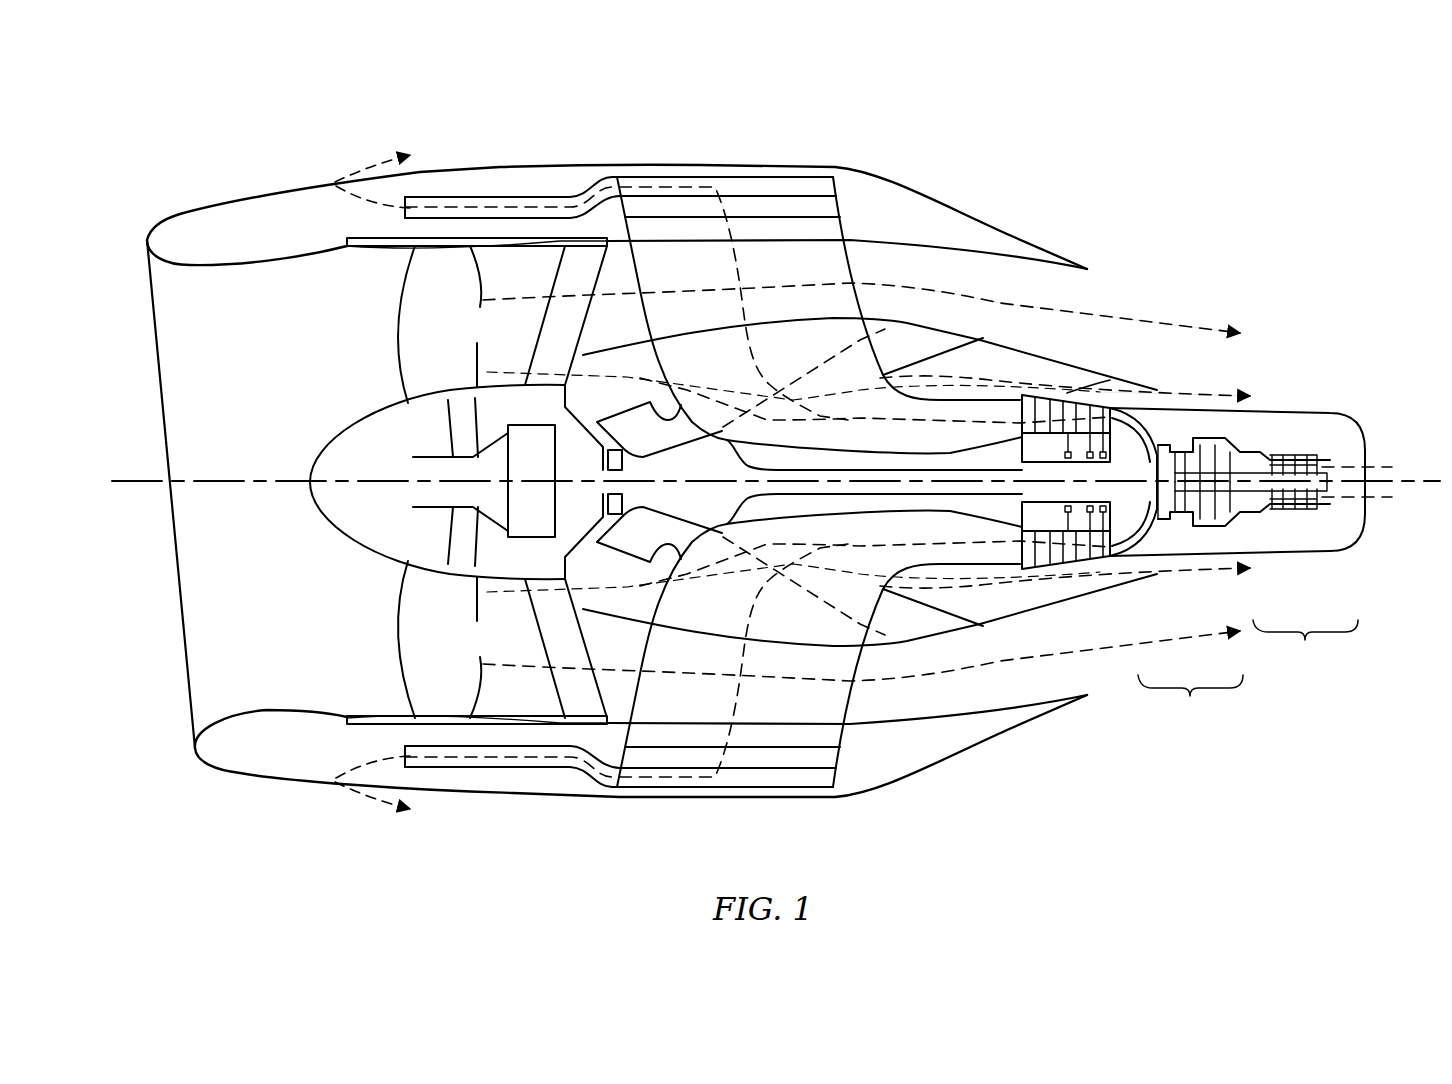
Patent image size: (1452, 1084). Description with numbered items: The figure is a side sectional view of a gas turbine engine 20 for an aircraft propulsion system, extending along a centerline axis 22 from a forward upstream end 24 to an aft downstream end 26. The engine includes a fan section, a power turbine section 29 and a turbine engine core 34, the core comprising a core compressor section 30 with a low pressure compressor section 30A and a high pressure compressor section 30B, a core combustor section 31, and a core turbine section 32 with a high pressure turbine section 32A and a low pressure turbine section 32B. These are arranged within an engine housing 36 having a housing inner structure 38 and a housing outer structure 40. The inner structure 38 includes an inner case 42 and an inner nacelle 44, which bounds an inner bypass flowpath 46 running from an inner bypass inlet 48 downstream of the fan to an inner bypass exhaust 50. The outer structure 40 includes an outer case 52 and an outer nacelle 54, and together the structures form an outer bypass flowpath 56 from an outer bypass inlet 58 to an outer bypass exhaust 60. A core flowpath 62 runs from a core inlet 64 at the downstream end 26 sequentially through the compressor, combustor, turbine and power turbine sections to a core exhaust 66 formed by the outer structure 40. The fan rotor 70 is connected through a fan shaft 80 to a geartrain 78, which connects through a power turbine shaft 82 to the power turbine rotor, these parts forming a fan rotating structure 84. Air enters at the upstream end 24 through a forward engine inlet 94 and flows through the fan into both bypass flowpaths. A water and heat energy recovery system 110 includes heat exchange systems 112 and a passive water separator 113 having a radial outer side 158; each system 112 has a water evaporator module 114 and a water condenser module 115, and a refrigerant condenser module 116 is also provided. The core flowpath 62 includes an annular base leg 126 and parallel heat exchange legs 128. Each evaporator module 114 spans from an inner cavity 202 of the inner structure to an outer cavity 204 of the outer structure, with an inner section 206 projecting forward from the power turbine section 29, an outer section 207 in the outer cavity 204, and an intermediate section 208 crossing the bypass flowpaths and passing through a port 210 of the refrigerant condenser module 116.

The gas turbine engine 20 is at (190, 165).
The centerline axis 22 is at (118, 481).
The upstream end 24 is at (147, 240).
The downstream end 26 is at (1362, 445).
The power turbine section 29 is at (1060, 570).
The core compressor section 30 is at (1305, 649).
The low pressure compressor section 30A is at (1302, 520).
The high pressure compressor section 30B is at (1250, 520).
The core combustor section 31 is at (1218, 528).
The core turbine section 32 is at (1190, 701).
The high pressure turbine section 32A is at (1184, 523).
The low pressure turbine section 32B is at (1168, 523).
The turbine engine core 34 is at (1278, 437).
The engine housing 36 is at (1022, 220).
The housing inner structure 38 is at (1068, 357).
The housing outer structure 40 is at (970, 210).
The inner case 42 is at (1067, 390).
The inner nacelle 44 is at (1027, 350).
The inner bypass flowpath 46 is at (941, 474).
The inner bypass inlet 48 is at (580, 360).
The inner bypass exhaust 50 is at (1157, 393).
The outer case 52 is at (360, 240).
The outer nacelle 54 is at (263, 192).
The outer bypass flowpath 56 is at (968, 471).
The outer bypass inlet 58 is at (593, 292).
The outer bypass exhaust 60 is at (1083, 292).
The core flowpath 62 is at (1160, 437).
The core inlet 64 is at (1375, 460).
The core exhaust 66 is at (340, 194).
The fan rotor 70 is at (440, 535).
The geartrain 78 is at (531, 481).
The fan shaft 80 is at (462, 545).
The power turbine shaft 82 is at (552, 537).
The fan rotating structure 84 is at (400, 455).
The forward engine inlet 94 is at (158, 352).
The water and heat energy recovery system 110 is at (860, 767).
The heat exchange system 112 is at (855, 232).
The passive water separator 113 is at (668, 168).
The water evaporator module 114 is at (627, 325).
The water condenser module 115 is at (729, 189).
The refrigerant condenser module 116 is at (610, 409).
The base leg 126 is at (1328, 460).
The heat exchange leg 128 is at (877, 425).
The radial outer side 158 is at (930, 736).
The inner cavity 202 is at (986, 450).
The outer cavity 204 is at (937, 225).
The inner section 206 is at (883, 375).
The outer section 207 is at (817, 217).
The intermediate section 208 is at (867, 300).
The port 210 is at (650, 402).